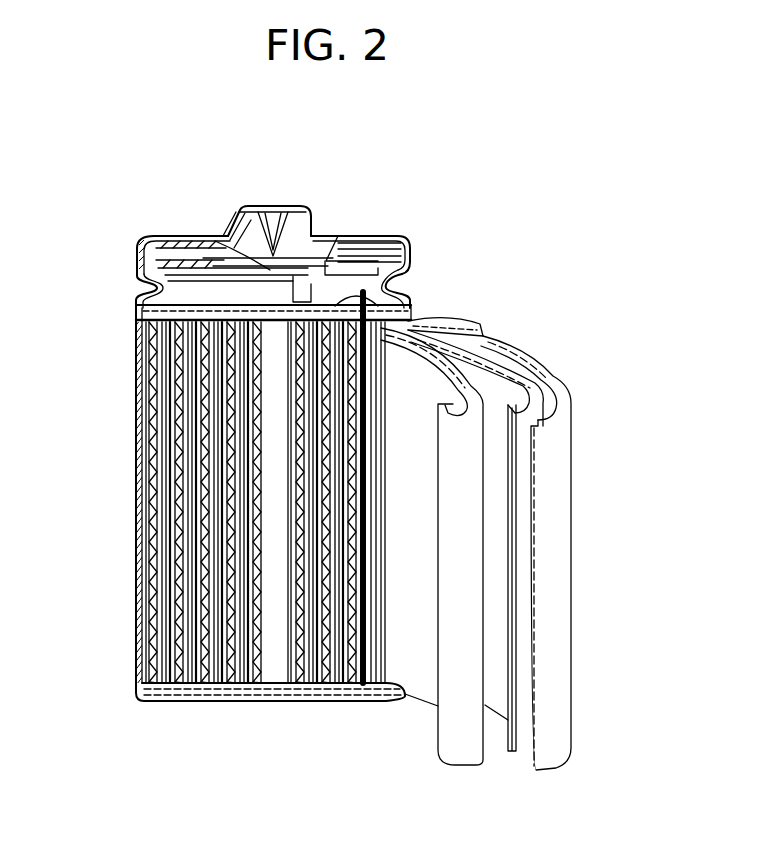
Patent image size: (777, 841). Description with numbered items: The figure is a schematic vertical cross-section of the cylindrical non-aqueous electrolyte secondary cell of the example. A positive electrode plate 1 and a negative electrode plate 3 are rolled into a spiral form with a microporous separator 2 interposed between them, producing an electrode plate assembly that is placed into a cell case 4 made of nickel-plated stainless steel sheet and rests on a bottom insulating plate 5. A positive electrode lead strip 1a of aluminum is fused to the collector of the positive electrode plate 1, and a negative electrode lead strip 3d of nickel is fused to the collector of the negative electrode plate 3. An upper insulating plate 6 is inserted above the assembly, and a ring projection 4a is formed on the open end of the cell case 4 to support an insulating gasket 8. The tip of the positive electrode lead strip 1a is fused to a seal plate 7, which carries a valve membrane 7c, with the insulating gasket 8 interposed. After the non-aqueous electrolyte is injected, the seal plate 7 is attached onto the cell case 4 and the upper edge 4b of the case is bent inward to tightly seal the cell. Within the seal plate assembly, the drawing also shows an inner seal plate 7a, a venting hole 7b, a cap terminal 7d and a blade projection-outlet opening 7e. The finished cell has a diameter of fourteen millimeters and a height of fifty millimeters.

The positive electrode plate 1 is at (145, 473).
The positive electrode lead strip 1a is at (393, 287).
The microporous separator 2 is at (140, 517).
The negative electrode plate 3 is at (140, 570).
The negative electrode lead strip 3d is at (267, 693).
The cell case 4 is at (127, 363).
The ring projection 4a is at (147, 280).
The upper edge 4b is at (400, 233).
The bottom insulating plate 5 is at (187, 693).
The upper insulating plate 6 is at (203, 297).
The seal plate 7 is at (299, 184).
The inner seal plate 7a is at (217, 247).
The venting hole 7b is at (220, 220).
The valve membrane 7c is at (313, 230).
The cap terminal 7d is at (303, 217).
The blade projection-outlet opening 7e is at (263, 200).
The insulating gasket 8 is at (130, 237).